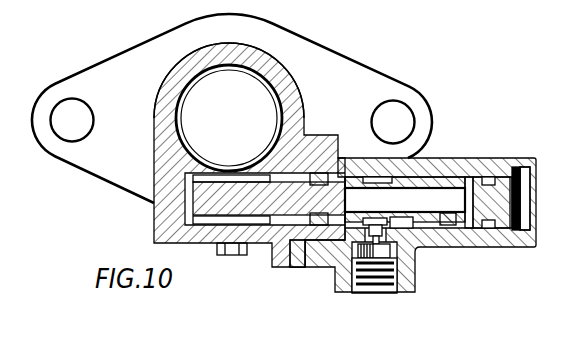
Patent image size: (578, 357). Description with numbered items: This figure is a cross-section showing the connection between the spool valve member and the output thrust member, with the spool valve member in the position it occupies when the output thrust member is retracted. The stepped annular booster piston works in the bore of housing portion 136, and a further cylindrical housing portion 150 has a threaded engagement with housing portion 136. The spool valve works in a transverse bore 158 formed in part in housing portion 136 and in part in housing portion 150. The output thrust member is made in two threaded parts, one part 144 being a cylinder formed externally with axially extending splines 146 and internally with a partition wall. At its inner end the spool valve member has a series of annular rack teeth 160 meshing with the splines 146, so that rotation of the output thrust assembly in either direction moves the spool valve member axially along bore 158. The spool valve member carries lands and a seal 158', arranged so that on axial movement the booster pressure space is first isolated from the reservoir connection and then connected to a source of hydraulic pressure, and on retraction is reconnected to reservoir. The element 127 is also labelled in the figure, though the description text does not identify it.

The housing portion 136 is at (303, 110).
The part of output thrust member 144 is at (253, 97).
The axially extending splines 146 is at (293, 75).
The cylindrical housing portion 150 is at (490, 168).
The transverse bore 158 is at (471, 257).
The seal 158' is at (326, 250).
The annular rack teeth 160 is at (217, 220).
The piston 127 is at (275, 203).